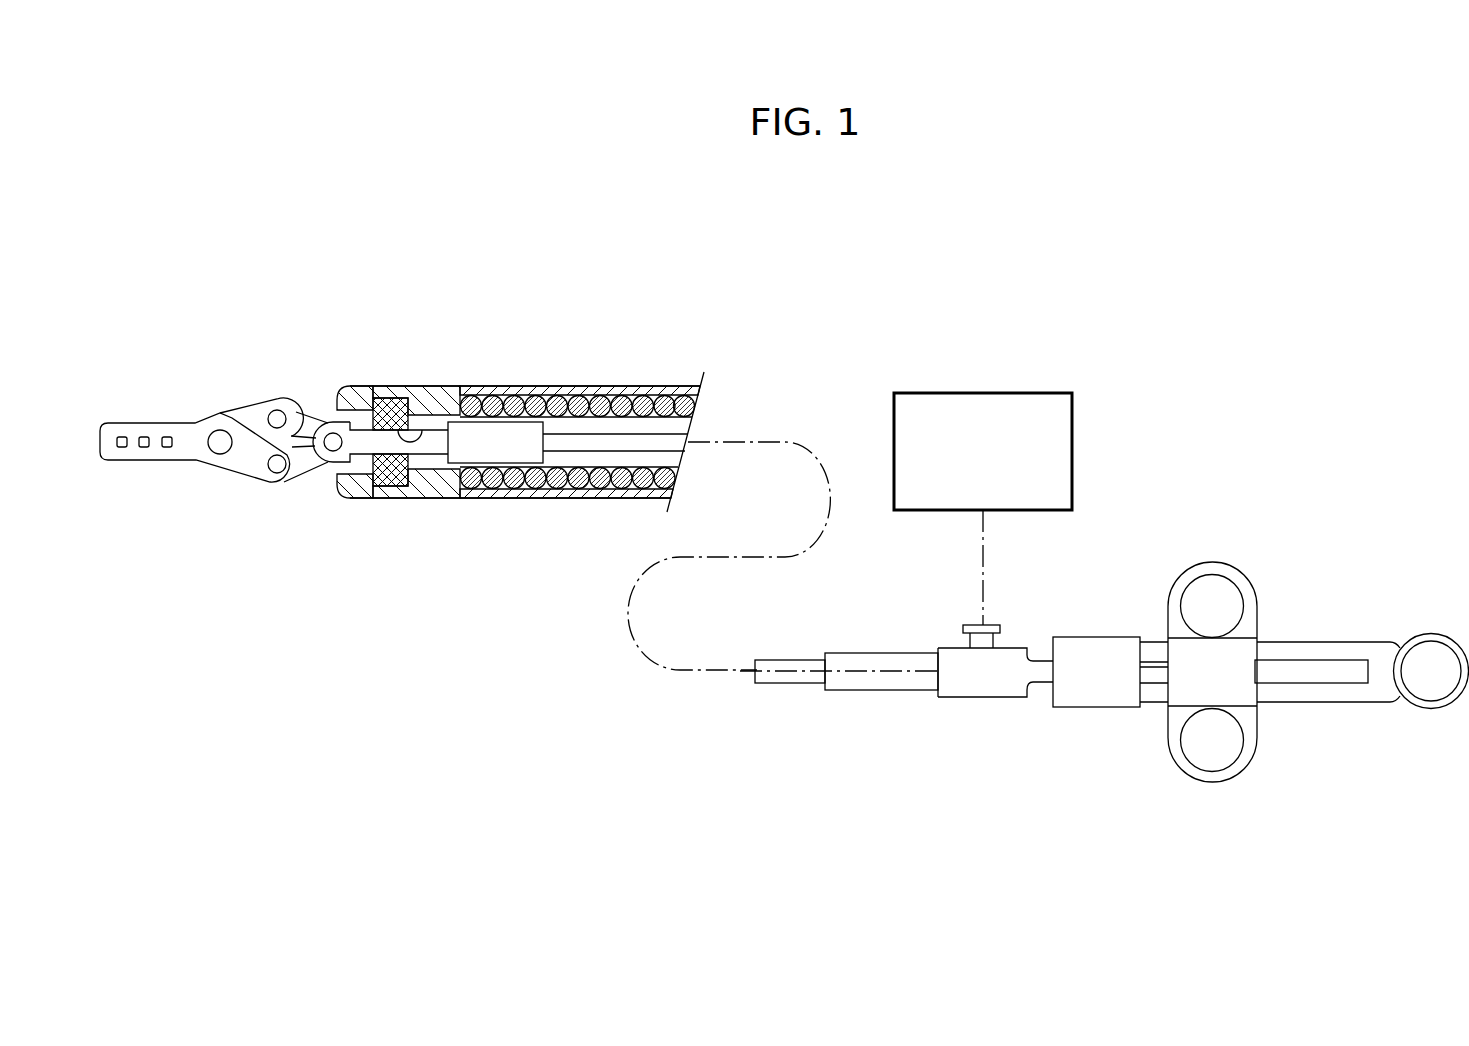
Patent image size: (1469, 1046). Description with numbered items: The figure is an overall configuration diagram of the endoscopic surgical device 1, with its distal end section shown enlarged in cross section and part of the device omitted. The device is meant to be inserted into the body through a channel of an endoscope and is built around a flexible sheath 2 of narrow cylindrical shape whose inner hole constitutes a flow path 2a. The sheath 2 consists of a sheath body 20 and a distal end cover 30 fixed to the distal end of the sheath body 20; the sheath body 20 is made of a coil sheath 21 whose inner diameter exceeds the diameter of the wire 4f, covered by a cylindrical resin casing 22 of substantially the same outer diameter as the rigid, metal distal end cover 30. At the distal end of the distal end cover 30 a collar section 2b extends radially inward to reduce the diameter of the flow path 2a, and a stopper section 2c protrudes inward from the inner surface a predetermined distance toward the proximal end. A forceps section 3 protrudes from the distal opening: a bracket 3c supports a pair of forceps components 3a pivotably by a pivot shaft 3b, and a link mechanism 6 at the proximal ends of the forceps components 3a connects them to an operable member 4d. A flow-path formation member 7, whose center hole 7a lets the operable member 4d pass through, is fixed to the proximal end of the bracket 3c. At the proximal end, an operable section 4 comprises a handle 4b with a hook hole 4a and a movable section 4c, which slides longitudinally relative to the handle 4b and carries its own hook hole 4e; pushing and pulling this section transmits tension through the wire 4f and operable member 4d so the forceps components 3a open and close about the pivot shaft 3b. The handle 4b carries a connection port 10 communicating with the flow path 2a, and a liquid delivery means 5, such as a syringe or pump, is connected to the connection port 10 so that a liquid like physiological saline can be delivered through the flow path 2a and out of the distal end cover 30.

The endoscopic surgical device 1 is at (902, 268).
The sheath 2 is at (691, 346).
The flow path 2a is at (584, 394).
The collar section 2b is at (362, 388).
The stopper section 2c is at (390, 488).
The sheath body 20 is at (529, 384).
The coil sheath 21 is at (625, 400).
The resin casing 22 is at (656, 393).
The forceps section 3 is at (240, 362).
The forceps components 3a is at (122, 421).
The pivot shaft 3b is at (216, 412).
The bracket 3c is at (334, 466).
The distal end cover 30 is at (435, 500).
The operable section 4 is at (1142, 746).
The hook hole 4a is at (1425, 692).
The handle 4b is at (1376, 641).
The movable section 4c is at (1262, 758).
The operable member 4d is at (483, 387).
The hook hole 4e is at (1222, 580).
The wire 4f is at (1152, 662).
The liquid delivery means 5 is at (978, 393).
The link mechanism 6 is at (296, 393).
The flow-path formation member 7 is at (392, 398).
The center hole 7a is at (416, 428).
The connection port 10 is at (972, 627).